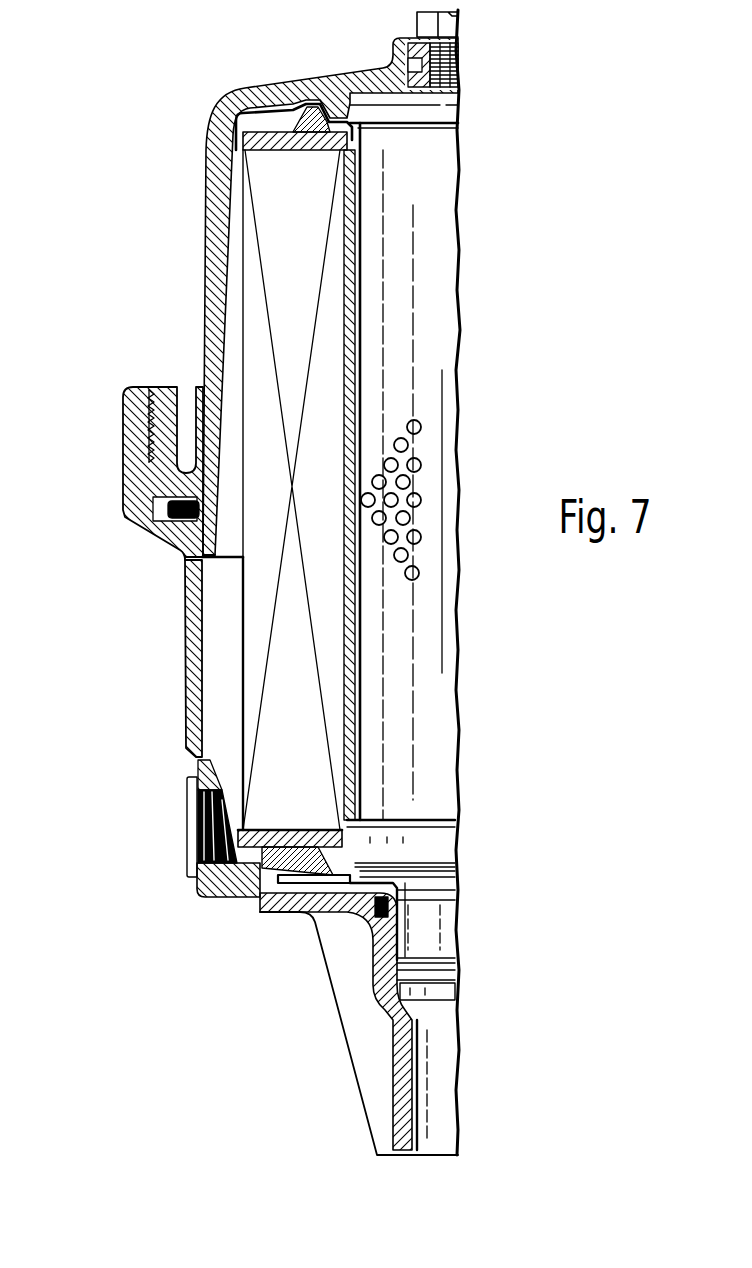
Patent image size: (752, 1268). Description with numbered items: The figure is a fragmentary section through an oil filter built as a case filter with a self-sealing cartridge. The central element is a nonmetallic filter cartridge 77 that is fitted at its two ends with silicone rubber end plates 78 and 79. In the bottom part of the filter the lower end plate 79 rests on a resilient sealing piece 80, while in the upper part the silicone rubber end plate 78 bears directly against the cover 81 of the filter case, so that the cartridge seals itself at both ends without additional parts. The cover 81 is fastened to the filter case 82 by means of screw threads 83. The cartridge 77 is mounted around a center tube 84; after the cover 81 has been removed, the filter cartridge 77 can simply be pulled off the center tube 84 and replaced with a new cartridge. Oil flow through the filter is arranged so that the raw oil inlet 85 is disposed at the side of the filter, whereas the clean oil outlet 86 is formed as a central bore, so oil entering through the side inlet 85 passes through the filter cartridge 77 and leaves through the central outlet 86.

The filter cartridge 77 is at (280, 292).
The end plate 78 is at (277, 130).
The end plate 79 is at (280, 852).
The resilient sealing piece 80 is at (297, 857).
The cover 81 is at (324, 96).
The filter case 82 is at (117, 421).
The screw threads 83 is at (150, 390).
The center tube 84 is at (355, 288).
The raw oil inlet 85 is at (203, 810).
The clean oil outlet 86 is at (437, 1092).